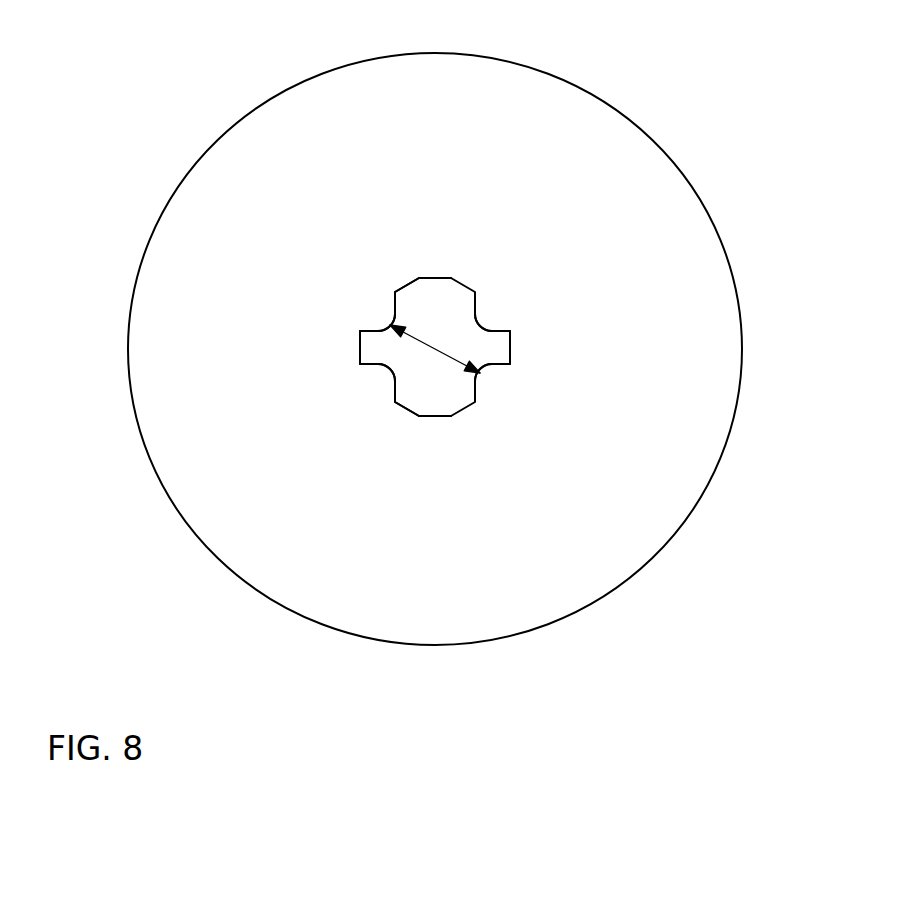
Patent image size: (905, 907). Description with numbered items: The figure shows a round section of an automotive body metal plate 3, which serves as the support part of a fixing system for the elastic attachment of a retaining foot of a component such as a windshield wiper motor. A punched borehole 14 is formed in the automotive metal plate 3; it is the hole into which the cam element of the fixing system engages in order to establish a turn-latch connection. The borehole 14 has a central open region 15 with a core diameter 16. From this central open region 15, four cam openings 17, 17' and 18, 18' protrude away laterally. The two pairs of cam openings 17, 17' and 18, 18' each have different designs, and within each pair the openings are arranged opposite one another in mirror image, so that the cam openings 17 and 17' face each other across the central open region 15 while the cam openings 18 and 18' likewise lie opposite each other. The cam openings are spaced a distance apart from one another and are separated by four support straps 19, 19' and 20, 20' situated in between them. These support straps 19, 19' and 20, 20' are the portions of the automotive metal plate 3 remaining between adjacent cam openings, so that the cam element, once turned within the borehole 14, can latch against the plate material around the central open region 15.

The automotive metal plate 3 is at (565, 582).
The punched borehole 14 is at (422, 333).
The central open region 15 is at (435, 367).
The core diameter 16 is at (440, 258).
The cam opening 17 is at (225, 355).
The cam opening 17' is at (649, 329).
The cam opening 18 is at (360, 156).
The cam opening 18' is at (353, 538).
The support strap 19 is at (269, 229).
The support strap 19' is at (624, 442).
The support strap 20 is at (612, 239).
The support strap 20' is at (268, 471).